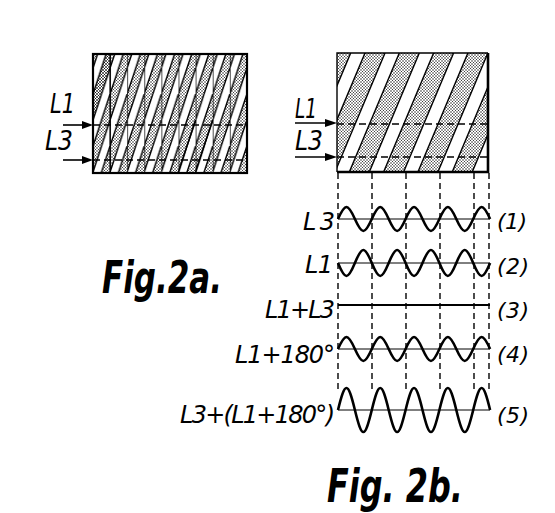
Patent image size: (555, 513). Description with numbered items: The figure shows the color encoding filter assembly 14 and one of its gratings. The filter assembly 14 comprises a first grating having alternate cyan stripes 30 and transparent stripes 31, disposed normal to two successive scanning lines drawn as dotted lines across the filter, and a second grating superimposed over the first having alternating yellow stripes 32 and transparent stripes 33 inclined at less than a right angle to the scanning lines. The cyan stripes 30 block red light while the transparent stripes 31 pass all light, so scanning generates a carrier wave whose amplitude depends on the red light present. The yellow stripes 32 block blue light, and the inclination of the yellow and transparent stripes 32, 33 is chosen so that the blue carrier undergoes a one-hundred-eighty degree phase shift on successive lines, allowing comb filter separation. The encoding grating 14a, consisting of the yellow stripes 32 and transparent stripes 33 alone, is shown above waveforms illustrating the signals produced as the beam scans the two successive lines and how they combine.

In FIG. 2a, the color encoding filter assembly 14 is at (93, 85).
In FIG. 2b, the encoding grating 14a is at (414, 92).
In FIG. 2a, the cyan stripes 30 is at (102, 182).
In FIG. 2a, the transparent stripes 31 is at (122, 182).
In FIG. 2a, the yellow stripes 32 is at (183, 182).
In FIG. 2b, the yellow stripes 32 is at (378, 53).
In FIG. 2a, the transparent stripes 33 is at (201, 182).
In FIG. 2b, the transparent stripes 33 is at (395, 53).